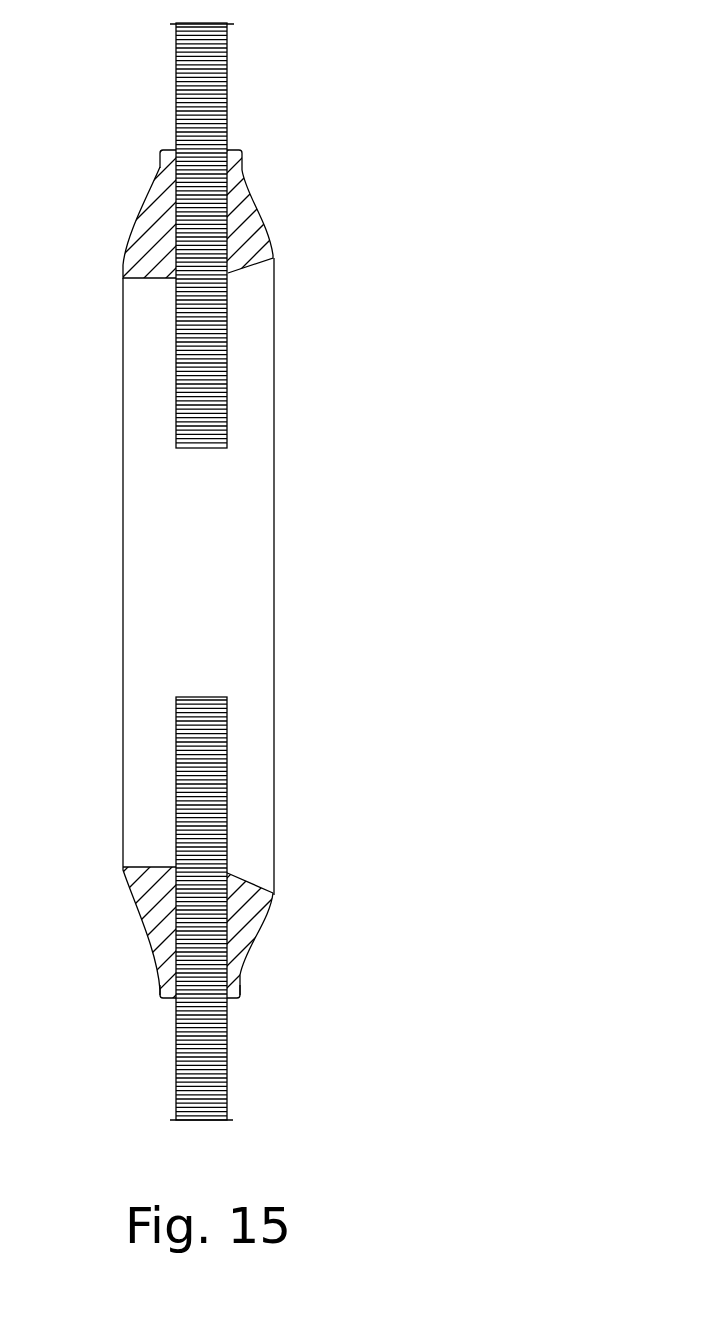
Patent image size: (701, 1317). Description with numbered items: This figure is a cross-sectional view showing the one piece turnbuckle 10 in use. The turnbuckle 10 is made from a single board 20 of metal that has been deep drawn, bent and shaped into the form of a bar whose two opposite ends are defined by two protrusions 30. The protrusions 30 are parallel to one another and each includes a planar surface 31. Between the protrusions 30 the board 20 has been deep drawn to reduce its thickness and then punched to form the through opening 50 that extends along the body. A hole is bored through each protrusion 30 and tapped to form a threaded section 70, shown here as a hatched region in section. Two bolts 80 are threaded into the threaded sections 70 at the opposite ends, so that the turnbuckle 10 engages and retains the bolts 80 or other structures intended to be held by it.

The turnbuckle 10 is at (500, 897).
The board 20 is at (132, 880).
The protrusions 30 is at (232, 183).
The planar surface 31 is at (233, 145).
The through opening 50 is at (238, 547).
The threaded section 70 is at (223, 222).
The bolts 80 is at (227, 45).